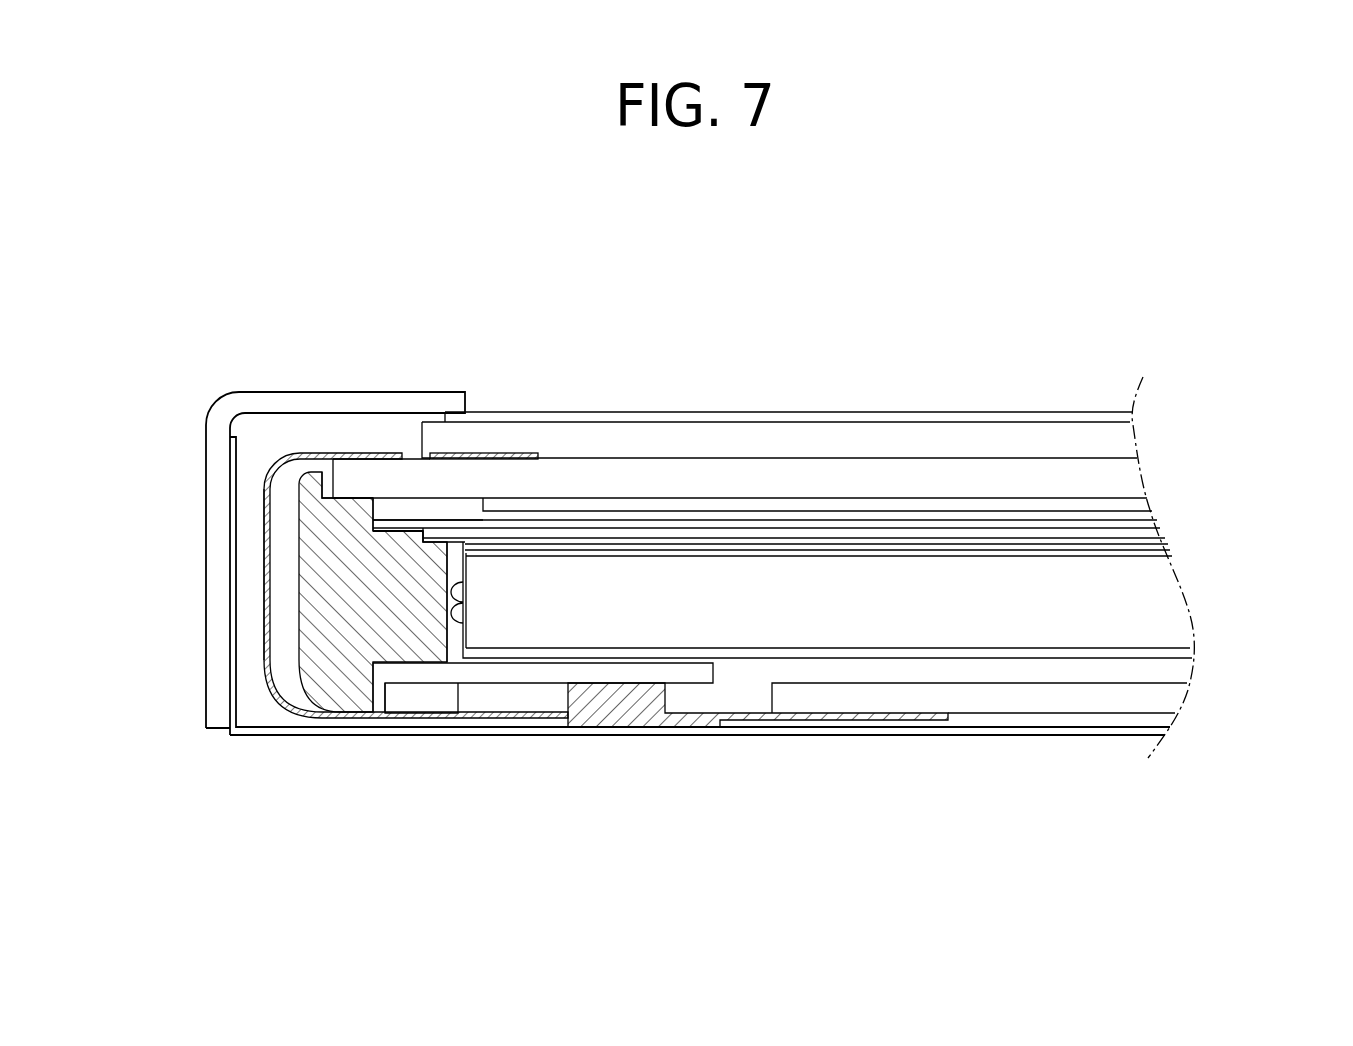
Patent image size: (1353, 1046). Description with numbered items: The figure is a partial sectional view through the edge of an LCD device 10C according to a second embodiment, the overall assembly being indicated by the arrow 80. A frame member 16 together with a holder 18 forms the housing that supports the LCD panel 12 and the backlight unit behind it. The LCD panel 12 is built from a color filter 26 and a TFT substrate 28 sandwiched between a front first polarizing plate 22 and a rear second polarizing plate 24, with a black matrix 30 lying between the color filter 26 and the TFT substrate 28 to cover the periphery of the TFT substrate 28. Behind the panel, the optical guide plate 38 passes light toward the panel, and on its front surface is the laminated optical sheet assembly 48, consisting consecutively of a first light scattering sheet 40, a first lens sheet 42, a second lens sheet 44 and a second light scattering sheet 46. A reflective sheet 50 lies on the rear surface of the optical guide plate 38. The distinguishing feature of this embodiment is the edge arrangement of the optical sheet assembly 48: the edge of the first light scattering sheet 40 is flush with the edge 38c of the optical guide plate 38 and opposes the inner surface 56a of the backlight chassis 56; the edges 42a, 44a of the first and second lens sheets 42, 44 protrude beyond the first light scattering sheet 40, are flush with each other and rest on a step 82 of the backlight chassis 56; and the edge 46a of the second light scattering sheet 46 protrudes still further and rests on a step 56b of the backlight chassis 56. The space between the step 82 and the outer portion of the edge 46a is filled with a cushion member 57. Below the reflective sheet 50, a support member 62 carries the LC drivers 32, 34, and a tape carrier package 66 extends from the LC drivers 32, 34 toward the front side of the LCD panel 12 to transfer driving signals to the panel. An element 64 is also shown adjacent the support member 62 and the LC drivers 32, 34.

The LCD device 10C is at (862, 252).
The display module assembly 80 is at (278, 283).
The frame member 16 is at (217, 447).
The holder 18 is at (443, 730).
The LCD panel 12 is at (542, 337).
The first polarizing plate 22 is at (718, 417).
The color filter 26 is at (612, 438).
The TFT substrate 28 is at (560, 470).
The black matrix 30 is at (512, 457).
The second polarizing plate 24 is at (657, 507).
The optical sheet assembly 48 is at (1282, 435).
The second light scattering sheet 46 is at (1152, 523).
The second lens sheet 44 is at (1162, 531).
The first lens sheet 42 is at (1167, 541).
The first light scattering sheet 40 is at (1172, 551).
The edge of second light scattering sheet 46a is at (390, 519).
The edge of second lens sheet 44a is at (437, 531).
The edge of first lens sheet 42a is at (448, 545).
The optical guide plate 38 is at (1175, 600).
The edge of optical guide plate 38c is at (464, 603).
The reflective sheet 50 is at (1180, 653).
The backlight chassis 56 is at (340, 683).
The inner surface of backlight chassis 56a is at (445, 624).
The step of backlight chassis 56b is at (433, 531).
The cushion member 57 is at (377, 530).
The tape carrier package 66 is at (273, 670).
The step of backlight chassis 82 is at (455, 541).
The support member 62 is at (475, 673).
The driving element 64 is at (403, 697).
The LC driver 32 is at (758, 762).
The LC driver 34 is at (610, 710).